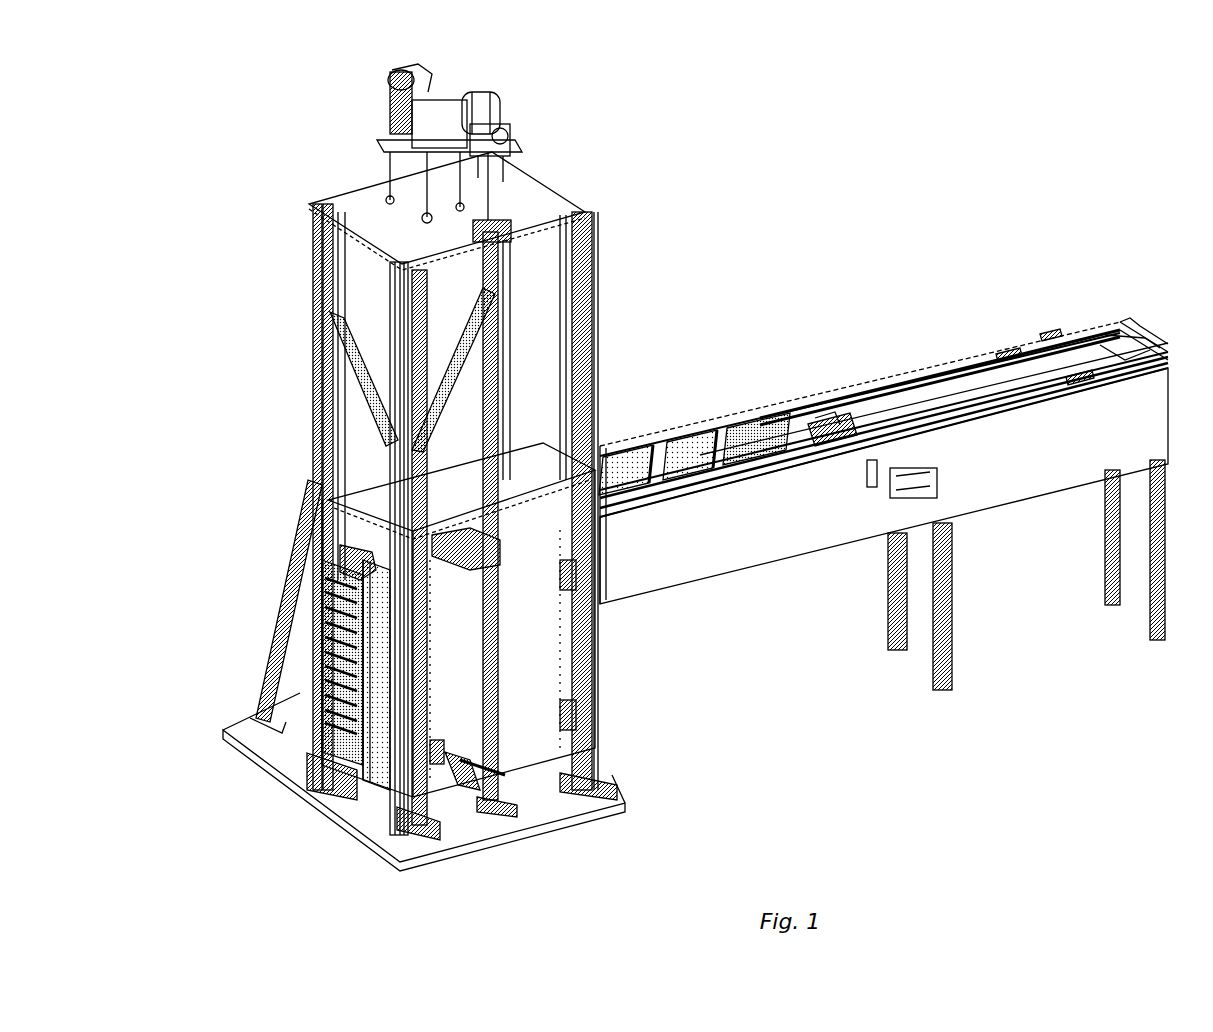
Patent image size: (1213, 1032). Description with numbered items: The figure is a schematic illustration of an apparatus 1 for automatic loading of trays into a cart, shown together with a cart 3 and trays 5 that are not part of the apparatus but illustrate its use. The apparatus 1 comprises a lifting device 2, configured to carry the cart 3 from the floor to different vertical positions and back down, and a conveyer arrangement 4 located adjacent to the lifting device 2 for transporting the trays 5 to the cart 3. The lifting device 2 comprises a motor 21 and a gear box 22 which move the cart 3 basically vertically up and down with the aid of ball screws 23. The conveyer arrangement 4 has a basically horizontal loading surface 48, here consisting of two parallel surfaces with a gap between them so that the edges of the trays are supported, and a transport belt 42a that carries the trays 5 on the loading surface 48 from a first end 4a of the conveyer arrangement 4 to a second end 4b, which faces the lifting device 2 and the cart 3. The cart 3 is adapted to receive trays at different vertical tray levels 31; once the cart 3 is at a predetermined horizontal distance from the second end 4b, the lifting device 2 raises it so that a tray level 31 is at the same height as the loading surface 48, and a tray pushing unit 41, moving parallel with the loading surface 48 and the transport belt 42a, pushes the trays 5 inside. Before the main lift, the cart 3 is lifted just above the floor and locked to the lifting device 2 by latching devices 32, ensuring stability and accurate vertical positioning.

The apparatus 1 is at (800, 128).
The lifting device 2 is at (322, 160).
The motor 21 is at (490, 86).
The gear box 22 is at (508, 132).
The ball screws 23 is at (428, 330).
The cart 3 is at (355, 478).
The tray levels 31 is at (330, 716).
The latching devices 32 is at (440, 755).
The conveyer arrangement 4 is at (862, 332).
The first end 4a is at (1143, 350).
The second end 4b is at (600, 545).
The tray pushing unit 41 is at (833, 430).
The transport belt 42a is at (965, 374).
The loading surface 48 is at (1078, 380).
The trays 5 is at (768, 440).